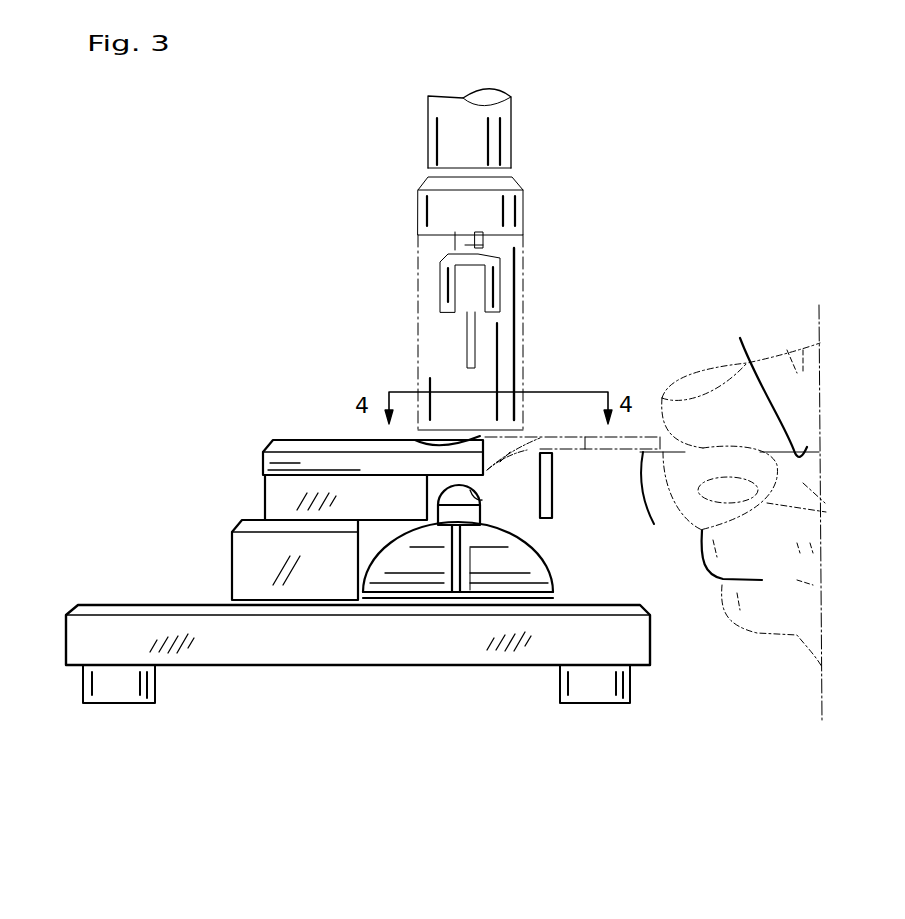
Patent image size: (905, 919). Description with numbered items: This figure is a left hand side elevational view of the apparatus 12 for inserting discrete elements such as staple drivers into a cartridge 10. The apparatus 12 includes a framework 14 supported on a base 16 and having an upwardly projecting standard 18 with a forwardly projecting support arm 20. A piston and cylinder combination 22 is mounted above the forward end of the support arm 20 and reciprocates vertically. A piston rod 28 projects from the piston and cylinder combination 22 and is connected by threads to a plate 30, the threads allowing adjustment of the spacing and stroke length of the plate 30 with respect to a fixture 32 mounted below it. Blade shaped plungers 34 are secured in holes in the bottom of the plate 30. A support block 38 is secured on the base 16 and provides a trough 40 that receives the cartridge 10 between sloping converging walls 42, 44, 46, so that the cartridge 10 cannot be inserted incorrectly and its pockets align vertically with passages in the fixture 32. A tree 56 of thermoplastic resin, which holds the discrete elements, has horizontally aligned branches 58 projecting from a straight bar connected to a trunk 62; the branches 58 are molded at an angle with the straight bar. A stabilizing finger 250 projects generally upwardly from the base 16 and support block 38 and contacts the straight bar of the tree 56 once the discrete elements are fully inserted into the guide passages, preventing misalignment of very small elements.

The cartridge 10 is at (443, 472).
The apparatus 12 is at (287, 250).
The framework 14 is at (64, 630).
The base 16 is at (498, 666).
The standard 18 is at (523, 318).
The support arm 20 is at (416, 207).
The piston and cylinder combination 22 is at (428, 112).
The piston rod 28 is at (476, 240).
The plate 30 is at (500, 274).
The fixture 32 is at (488, 447).
The blade shaped plungers 34 is at (467, 338).
The support block 38 is at (232, 552).
The trough 40 is at (478, 500).
The sloping converging wall 42 is at (488, 563).
The sloping converging wall 44 is at (543, 550).
The sloping converging wall 46 is at (383, 540).
The tree 56 is at (662, 502).
The branches 58 is at (554, 470).
The trunk 62 is at (744, 512).
The stabilizing finger 250 is at (552, 496).